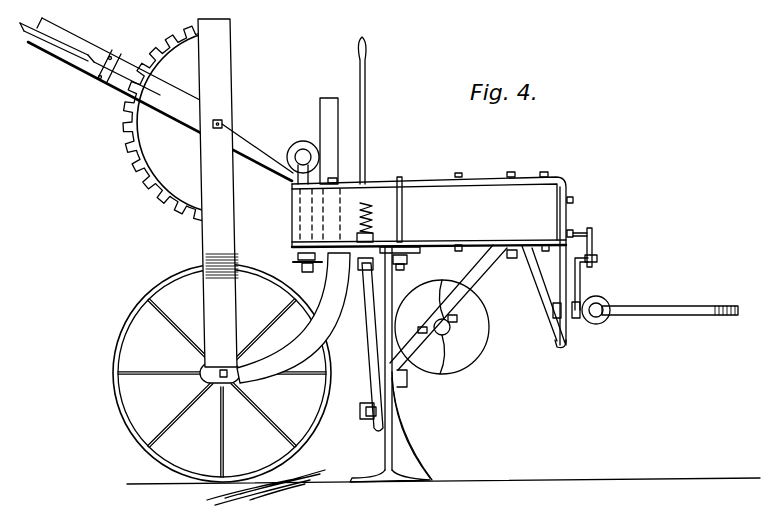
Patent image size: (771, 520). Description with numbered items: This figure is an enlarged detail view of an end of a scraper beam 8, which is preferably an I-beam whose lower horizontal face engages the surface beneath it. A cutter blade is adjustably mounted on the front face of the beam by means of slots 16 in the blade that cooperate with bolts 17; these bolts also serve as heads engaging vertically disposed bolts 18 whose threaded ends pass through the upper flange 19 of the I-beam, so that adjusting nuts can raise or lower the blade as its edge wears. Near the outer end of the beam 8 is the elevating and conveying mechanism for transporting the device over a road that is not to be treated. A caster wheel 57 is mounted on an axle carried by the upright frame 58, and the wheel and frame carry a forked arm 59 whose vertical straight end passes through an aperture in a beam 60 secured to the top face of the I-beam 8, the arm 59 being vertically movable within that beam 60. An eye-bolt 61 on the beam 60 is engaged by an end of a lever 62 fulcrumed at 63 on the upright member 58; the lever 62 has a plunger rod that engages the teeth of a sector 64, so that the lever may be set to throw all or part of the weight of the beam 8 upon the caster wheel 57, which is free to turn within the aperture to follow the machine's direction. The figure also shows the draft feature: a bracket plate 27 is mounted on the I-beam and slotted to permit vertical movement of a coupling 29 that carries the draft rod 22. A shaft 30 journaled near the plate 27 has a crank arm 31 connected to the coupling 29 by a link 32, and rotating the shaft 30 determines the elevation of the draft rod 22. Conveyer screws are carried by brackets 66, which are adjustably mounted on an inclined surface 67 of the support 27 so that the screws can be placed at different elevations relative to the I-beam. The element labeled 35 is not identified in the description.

The scraper beam 8 is at (388, 447).
The slot 16 is at (418, 452).
The bolt 17 is at (402, 412).
The vertically disposed bolt 18 is at (372, 340).
The upper flange 19 is at (352, 250).
The draft rod 22 is at (688, 307).
The bracket plate 27 is at (558, 344).
The coupling 29 is at (605, 302).
The shaft 30 is at (578, 233).
The crank arm 31 is at (593, 250).
The link 32 is at (583, 288).
The lever rod 35 is at (368, 145).
The caster wheel 57 is at (152, 447).
The upright frame 58 is at (205, 237).
The forked arm 59 is at (330, 100).
The beam 60 is at (472, 193).
The eye-bolt 61 is at (288, 178).
The lever 62 is at (72, 42).
The fulcrum 63 is at (230, 115).
The sector 64 is at (128, 152).
The bracket 66 is at (450, 330).
The inclined surface 67 is at (480, 273).